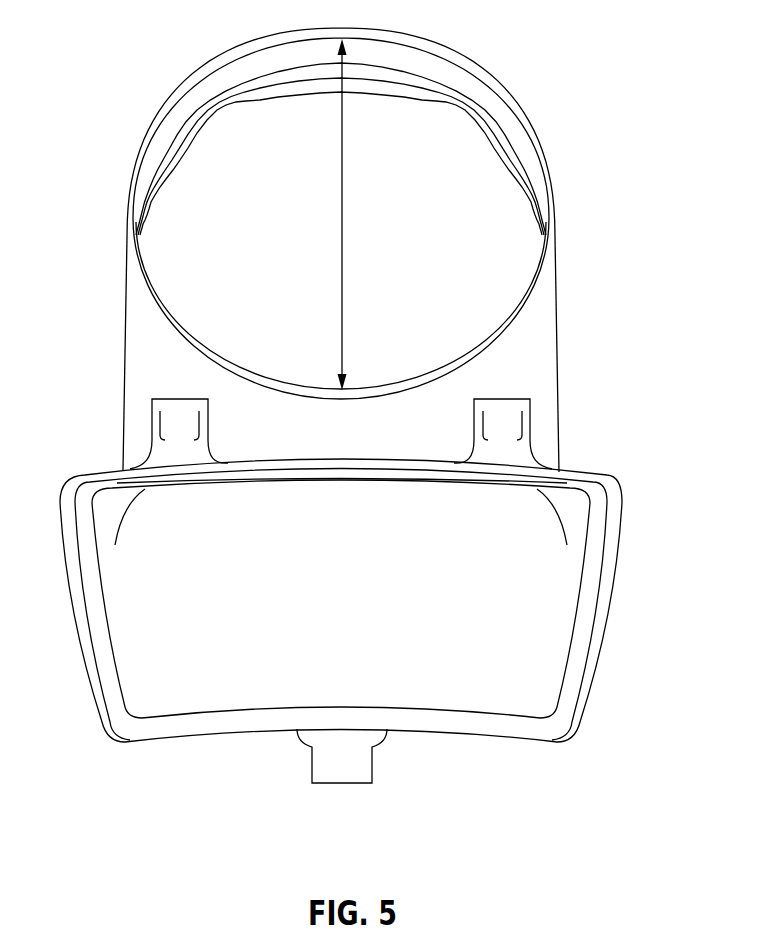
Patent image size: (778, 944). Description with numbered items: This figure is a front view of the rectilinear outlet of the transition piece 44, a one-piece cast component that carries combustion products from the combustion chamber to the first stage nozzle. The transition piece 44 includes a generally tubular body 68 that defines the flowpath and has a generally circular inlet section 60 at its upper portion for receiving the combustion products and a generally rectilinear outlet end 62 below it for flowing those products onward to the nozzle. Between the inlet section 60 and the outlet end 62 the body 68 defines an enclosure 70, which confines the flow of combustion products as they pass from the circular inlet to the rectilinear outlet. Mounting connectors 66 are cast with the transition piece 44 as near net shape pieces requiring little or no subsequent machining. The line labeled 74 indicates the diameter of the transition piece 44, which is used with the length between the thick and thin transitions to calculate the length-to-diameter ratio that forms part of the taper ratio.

The transition piece 44 is at (613, 86).
The circular inlet section 60 is at (458, 62).
The rectilinear outlet end 62 is at (594, 571).
The mounting connectors 66 is at (173, 412).
The body 68 is at (358, 444).
The enclosure 70 is at (362, 612).
The diameter 74 is at (342, 220).